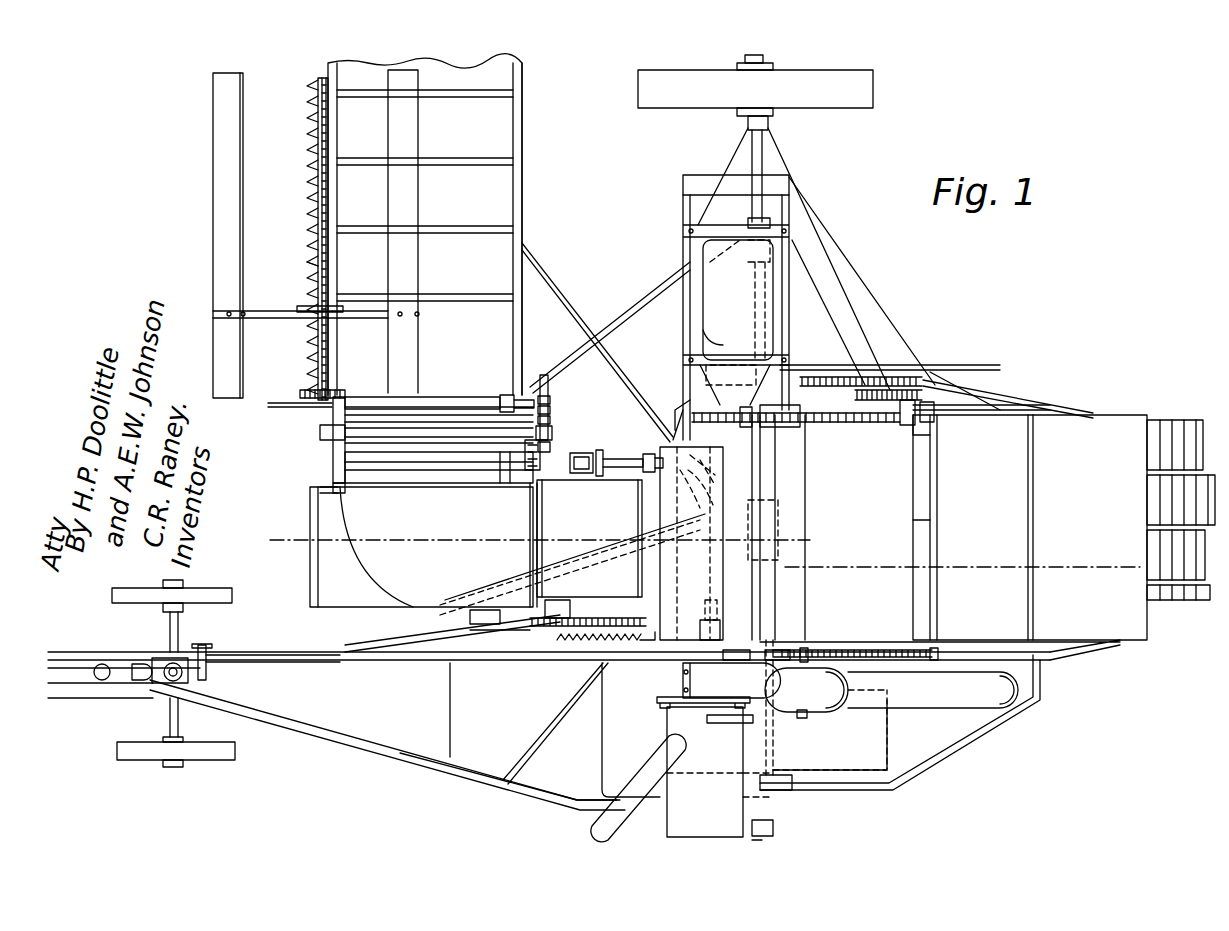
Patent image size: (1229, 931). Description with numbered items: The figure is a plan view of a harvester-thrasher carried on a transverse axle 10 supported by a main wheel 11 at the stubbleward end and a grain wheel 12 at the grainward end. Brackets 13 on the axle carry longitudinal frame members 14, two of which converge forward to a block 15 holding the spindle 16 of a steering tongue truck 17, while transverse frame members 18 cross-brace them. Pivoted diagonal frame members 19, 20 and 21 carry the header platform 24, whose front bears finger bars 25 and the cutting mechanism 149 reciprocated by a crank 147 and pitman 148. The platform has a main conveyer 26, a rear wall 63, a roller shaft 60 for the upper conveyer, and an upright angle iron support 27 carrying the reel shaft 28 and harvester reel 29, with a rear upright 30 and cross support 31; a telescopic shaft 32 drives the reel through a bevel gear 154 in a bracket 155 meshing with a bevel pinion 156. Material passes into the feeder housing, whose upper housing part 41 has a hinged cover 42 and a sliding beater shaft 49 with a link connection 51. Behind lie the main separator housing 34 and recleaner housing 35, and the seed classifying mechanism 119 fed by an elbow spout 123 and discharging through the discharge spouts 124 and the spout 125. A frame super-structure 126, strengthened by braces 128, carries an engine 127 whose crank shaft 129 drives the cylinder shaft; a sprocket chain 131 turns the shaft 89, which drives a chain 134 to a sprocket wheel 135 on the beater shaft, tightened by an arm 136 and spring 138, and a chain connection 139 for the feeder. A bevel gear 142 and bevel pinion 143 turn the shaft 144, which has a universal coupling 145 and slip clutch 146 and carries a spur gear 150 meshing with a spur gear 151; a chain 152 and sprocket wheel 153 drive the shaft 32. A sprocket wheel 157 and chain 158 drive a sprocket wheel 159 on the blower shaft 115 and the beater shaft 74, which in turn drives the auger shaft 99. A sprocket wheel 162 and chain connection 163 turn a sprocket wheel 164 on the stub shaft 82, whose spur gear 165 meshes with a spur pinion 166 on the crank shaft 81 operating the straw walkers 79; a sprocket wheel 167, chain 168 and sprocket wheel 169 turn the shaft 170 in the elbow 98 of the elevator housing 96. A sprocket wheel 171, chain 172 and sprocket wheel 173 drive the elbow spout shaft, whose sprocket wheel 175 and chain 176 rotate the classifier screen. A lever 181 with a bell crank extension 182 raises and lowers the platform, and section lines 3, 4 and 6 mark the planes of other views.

The section line 3- 3 is at (829, 528).
The section line 4- 4 is at (1141, 554).
The section line 6- 6 is at (464, 527).
The axle 10 is at (762, 162).
The main wheel 11 is at (890, 752).
The grain wheel 12 is at (878, 97).
The brackets 13 is at (810, 805).
The longitudinal frame members 14 is at (860, 785).
The block 15 is at (205, 690).
The spindle 16 is at (170, 680).
The pilot or steering tongue truck 17 is at (205, 750).
The transverse frame members 18 is at (620, 750).
The diagonal frame member 19 is at (648, 288).
The diagonal frame member 20 is at (624, 362).
The diagonal frame member 21 is at (500, 588).
The header platform 24 is at (514, 135).
The finger bars 25 is at (316, 166).
The main conveyer 26 is at (428, 231).
The upright angle iron support 27 is at (320, 428).
The reel shaft 28 is at (316, 232).
The harvester reel 29 is at (243, 198).
The upright 30 is at (550, 410).
The cross support 31 is at (550, 420).
The telescopic shaft 32 is at (468, 398).
The main separator housing 34 is at (1090, 420).
The recleaner housing 35 is at (915, 512).
The upper housing part 41 is at (338, 586).
The hinged cover 42 is at (493, 619).
The transverse shaft 49 is at (572, 600).
The link connection 51 is at (465, 630).
The roller shaft 60 is at (550, 400).
The rear wall 63 is at (550, 447).
The shaft 74 is at (878, 397).
The straw walkers 79 is at (1195, 430).
The crank shaft 81 is at (940, 385).
The stub shaft 82 is at (927, 425).
The shaft 89 is at (717, 332).
The elevator housing 96 is at (953, 690).
The elbow 98 is at (825, 675).
The shaft 99 is at (770, 427).
The blower shaft 115 is at (718, 447).
The seed classifying mechanism 119 is at (778, 846).
The elbow spout 123 is at (675, 705).
The discharge spouts 124 is at (773, 828).
The spout 125 is at (630, 820).
The frame super-structure 126 is at (680, 258).
The engine 127 is at (770, 300).
The braces 128 is at (888, 317).
The crank shaft 129 is at (800, 380).
The sprocket chain 131 is at (700, 630).
The chain 134 is at (578, 634).
The sprocket wheel 135 is at (500, 640).
The arm 136 is at (640, 650).
The spring 138 is at (578, 650).
The chain connection 139 is at (620, 595).
The bevel gear 142 is at (723, 470).
The bevel pinion 143 is at (701, 489).
The shaft 144 is at (642, 443).
The universal coupling 145 is at (612, 490).
The slip clutch 146 is at (578, 473).
The crank 147 is at (320, 480).
The pitman 148 is at (332, 457).
The cutting mechanism 149 is at (308, 266).
The spur gear 150 is at (528, 478).
The spur gear 151 is at (520, 448).
The chain 152 is at (552, 433).
The sprocket wheel 153 is at (540, 380).
The bevel gear 154 is at (352, 392).
The bracket 155 is at (315, 403).
The bevel pinion 156 is at (309, 390).
The sprocket wheel 157 is at (738, 300).
The chain 158 is at (775, 433).
The sprocket wheel 159 is at (673, 400).
The sprocket wheel 162 is at (720, 365).
The chain connection 163 is at (860, 370).
The sprocket wheel 164 is at (950, 353).
The spur gear 165 is at (905, 425).
The spur pinion 166 is at (932, 425).
The sprocket wheel 167 is at (938, 648).
The chain 168 is at (905, 650).
The sprocket wheel 169 is at (827, 644).
The shaft 170 is at (802, 718).
The sprocket wheel 171 is at (712, 675).
The chain 172 is at (735, 650).
The sprocket wheel 173 is at (784, 643).
The sprocket wheel 175 is at (730, 778).
The chain 176 is at (720, 723).
The lever 181 is at (189, 640).
The bell crank extension 182 is at (290, 670).